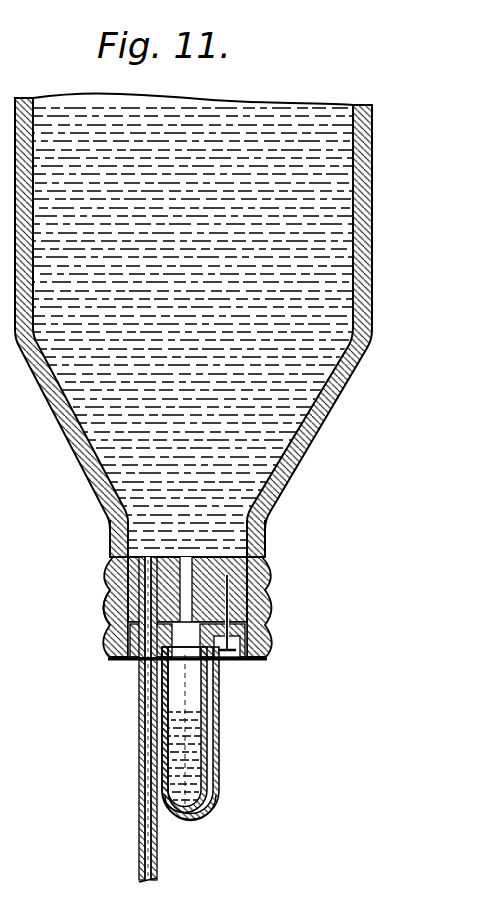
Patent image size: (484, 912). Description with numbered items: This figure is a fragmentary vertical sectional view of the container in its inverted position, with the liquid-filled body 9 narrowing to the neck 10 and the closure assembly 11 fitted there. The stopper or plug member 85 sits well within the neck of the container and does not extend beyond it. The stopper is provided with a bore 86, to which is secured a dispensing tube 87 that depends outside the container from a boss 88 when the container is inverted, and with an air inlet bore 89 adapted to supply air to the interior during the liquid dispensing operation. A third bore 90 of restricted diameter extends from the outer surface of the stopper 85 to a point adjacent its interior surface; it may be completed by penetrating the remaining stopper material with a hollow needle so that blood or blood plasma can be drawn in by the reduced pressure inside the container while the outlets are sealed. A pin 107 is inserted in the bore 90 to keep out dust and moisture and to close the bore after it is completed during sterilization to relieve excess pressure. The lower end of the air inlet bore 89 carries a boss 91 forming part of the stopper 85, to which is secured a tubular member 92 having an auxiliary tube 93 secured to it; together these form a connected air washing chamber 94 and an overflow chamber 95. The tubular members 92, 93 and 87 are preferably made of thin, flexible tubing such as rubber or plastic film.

The container body 9 is at (333, 413).
The container neck 10 is at (265, 542).
The bore 89 is at (267, 560).
The closure cap 11 is at (270, 590).
The stopper or plug member 85 is at (262, 598).
The third bore 90 is at (263, 617).
The boss 91 is at (229, 638).
The pin 107 is at (257, 658).
The bore 86 is at (127, 580).
The boss 88 is at (140, 630).
The dispensing tube 87 is at (138, 745).
The auxiliary tube 93 is at (220, 718).
The tubular member 92 is at (207, 738).
The air washing chamber 94 is at (192, 760).
The overflow chamber 95 is at (212, 786).